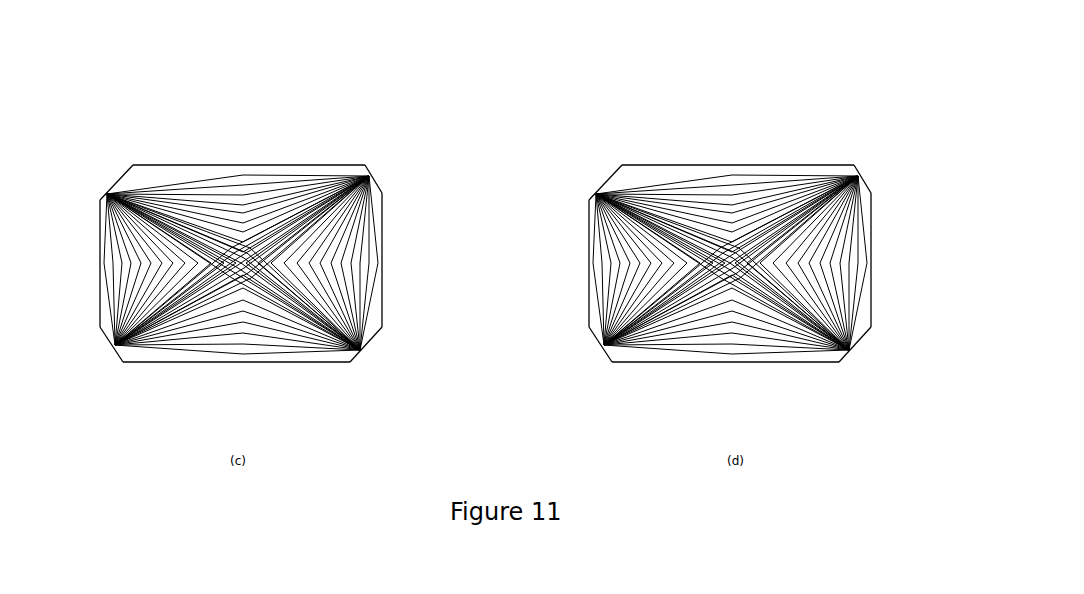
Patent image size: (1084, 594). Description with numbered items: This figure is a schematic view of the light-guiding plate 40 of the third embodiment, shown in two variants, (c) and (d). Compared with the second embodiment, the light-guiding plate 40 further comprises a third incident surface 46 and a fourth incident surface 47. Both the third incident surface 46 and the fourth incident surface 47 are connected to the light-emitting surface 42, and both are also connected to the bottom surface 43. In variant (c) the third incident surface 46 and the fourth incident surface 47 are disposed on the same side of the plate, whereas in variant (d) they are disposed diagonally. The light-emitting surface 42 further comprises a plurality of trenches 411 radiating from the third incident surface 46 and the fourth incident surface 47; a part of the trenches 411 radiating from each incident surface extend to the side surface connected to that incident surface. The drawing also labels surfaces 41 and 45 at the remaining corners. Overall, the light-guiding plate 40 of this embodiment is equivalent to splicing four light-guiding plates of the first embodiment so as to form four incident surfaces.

The light-guiding plate 40 is at (242, 67).
The upper right corner portion 41 is at (373, 182).
The light-emitting surface 42 is at (244, 172).
The bottom surface 43 is at (245, 363).
The trenches 411 is at (122, 209).
The corner portion 45 is at (110, 190).
The third incident surface 46 is at (115, 343).
The fourth incident surface 47 is at (358, 350).